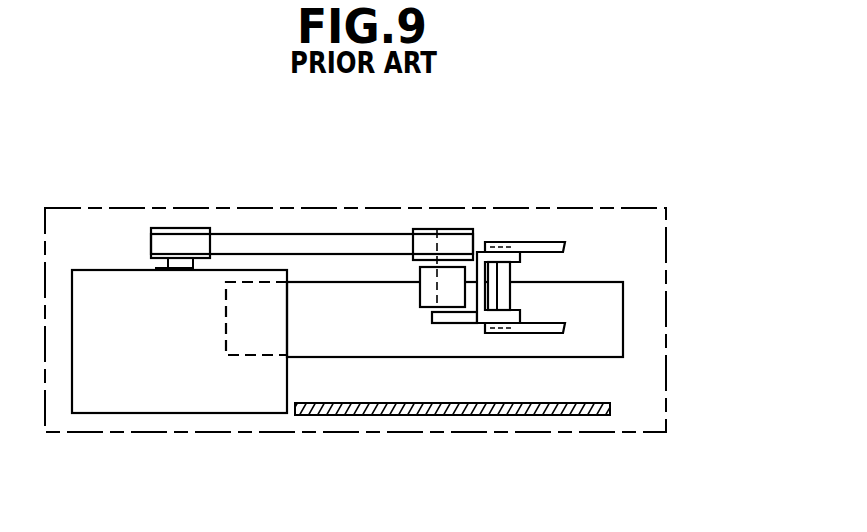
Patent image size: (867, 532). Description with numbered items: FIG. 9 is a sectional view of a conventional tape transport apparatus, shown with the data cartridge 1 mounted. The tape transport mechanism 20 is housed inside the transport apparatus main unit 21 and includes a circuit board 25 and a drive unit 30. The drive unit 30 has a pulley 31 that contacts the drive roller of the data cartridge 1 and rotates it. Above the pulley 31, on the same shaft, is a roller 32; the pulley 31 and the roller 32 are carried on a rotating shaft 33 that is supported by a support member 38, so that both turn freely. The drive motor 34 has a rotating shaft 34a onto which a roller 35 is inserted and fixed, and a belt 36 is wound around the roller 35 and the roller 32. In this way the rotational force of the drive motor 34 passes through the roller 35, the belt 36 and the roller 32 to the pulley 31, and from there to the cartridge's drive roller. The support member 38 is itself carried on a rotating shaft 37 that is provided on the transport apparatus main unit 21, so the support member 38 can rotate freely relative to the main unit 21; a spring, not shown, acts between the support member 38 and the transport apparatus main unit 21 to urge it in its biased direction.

The tape transport mechanism 20 is at (555, 148).
The data cartridge 1 is at (615, 318).
The transport apparatus main unit 21 is at (552, 433).
The circuit board 25 is at (610, 410).
The drive unit 30 is at (300, 224).
The pulley 31 is at (420, 290).
The roller 32 is at (440, 229).
The rotating shaft 33 is at (450, 230).
The drive motor 34 is at (143, 402).
The rotating shaft of the drive motor 34a is at (155, 268).
The roller 35 is at (167, 228).
The belt 36 is at (360, 234).
The rotating shaft 37 is at (503, 293).
The support member 38 is at (473, 318).